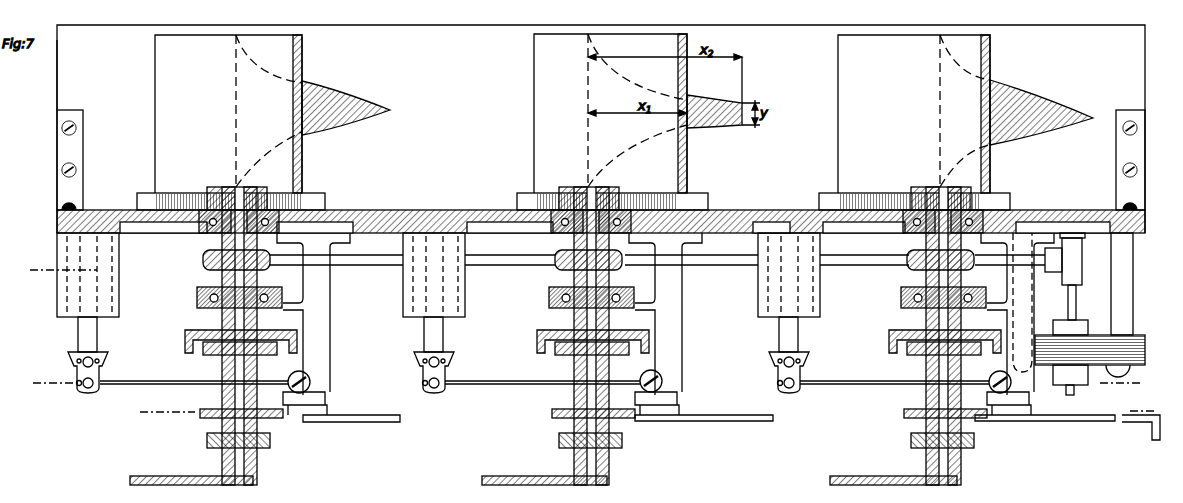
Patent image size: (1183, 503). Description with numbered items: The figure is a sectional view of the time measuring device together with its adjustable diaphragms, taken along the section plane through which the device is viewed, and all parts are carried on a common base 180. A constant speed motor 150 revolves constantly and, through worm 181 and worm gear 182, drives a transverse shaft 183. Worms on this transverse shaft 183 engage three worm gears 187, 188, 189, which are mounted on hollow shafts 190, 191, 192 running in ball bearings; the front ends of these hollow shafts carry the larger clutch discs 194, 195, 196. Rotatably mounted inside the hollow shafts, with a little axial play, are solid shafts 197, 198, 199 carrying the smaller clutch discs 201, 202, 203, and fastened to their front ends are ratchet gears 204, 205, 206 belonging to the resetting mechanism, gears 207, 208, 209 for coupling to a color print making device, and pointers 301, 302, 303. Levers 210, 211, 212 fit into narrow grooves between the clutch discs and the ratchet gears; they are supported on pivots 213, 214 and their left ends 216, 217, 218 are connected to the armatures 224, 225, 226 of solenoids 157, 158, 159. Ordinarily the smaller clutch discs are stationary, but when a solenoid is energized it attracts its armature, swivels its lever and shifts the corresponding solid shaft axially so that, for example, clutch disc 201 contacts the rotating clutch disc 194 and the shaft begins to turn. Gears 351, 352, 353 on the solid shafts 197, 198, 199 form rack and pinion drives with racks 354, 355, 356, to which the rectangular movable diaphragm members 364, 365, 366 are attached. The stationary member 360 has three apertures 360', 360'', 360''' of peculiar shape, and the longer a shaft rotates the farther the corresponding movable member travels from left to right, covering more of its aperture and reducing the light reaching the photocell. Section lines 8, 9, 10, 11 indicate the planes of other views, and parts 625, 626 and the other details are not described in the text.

The section line / side plate 8 is at (1155, 272).
The section line 9 is at (585, 383).
The section line 10 is at (647, 410).
The side plate 11 is at (57, 113).
The constant speed motor 150 is at (1130, 341).
The solenoid 157 is at (57, 300).
The solenoid 158 is at (403, 298).
The solenoid 159 is at (758, 300).
The base 180 is at (437, 212).
The worm 181 is at (1080, 272).
The worm gear 182 is at (1076, 263).
The transverse shaft 183 is at (737, 268).
The worm gear 187 is at (206, 262).
The worm gear 188 is at (556, 258).
The worm gear 189 is at (908, 258).
The hollow shaft 190 is at (222, 312).
The hollow shaft 191 is at (574, 317).
The hollow shaft 192 is at (926, 317).
The clutch disc 194 is at (185, 335).
The clutch disc 195 is at (537, 337).
The clutch disc 196 is at (889, 337).
The solid shaft 197 is at (241, 486).
The solid shaft 198 is at (600, 486).
The solid shaft 199 is at (940, 486).
The clutch disc 201 is at (213, 356).
The clutch disc 202 is at (565, 356).
The clutch disc 203 is at (913, 356).
The ratchet gear 204 is at (211, 409).
The ratchet gear 205 is at (565, 409).
The ratchet gear 206 is at (910, 409).
The gear 207 is at (268, 447).
The gear 208 is at (626, 446).
The gear 209 is at (970, 447).
The lever 210 is at (115, 386).
The lever 211 is at (485, 386).
The lever 212 is at (844, 386).
The pivot 213 is at (308, 386).
The pivot 214 is at (661, 385).
The left end of lever 216 is at (88, 392).
The left end of lever 217 is at (428, 392).
The left end of lever 218 is at (789, 394).
The armature 224 is at (93, 332).
The armature 225 is at (425, 333).
The armature 226 is at (780, 333).
The pointer 301 is at (150, 477).
The pointer 302 is at (535, 477).
The pointer 303 is at (885, 477).
The gear 351 is at (250, 187).
The gear 352 is at (608, 187).
The gear 353 is at (927, 186).
The rack 354 is at (176, 190).
The rack 355 is at (690, 184).
The rack 356 is at (864, 190).
The stationary diaphragm member 360 is at (38, 75).
The aperture 360' is at (346, 102).
The aperture 360'' is at (723, 118).
The aperture 360''' is at (1041, 101).
The movable diaphragm member 364 is at (156, 78).
The movable diaphragm member 365 is at (534, 78).
The movable diaphragm member 366 is at (838, 68).
The plate 625 is at (713, 423).
The bracket 626 is at (1152, 435).